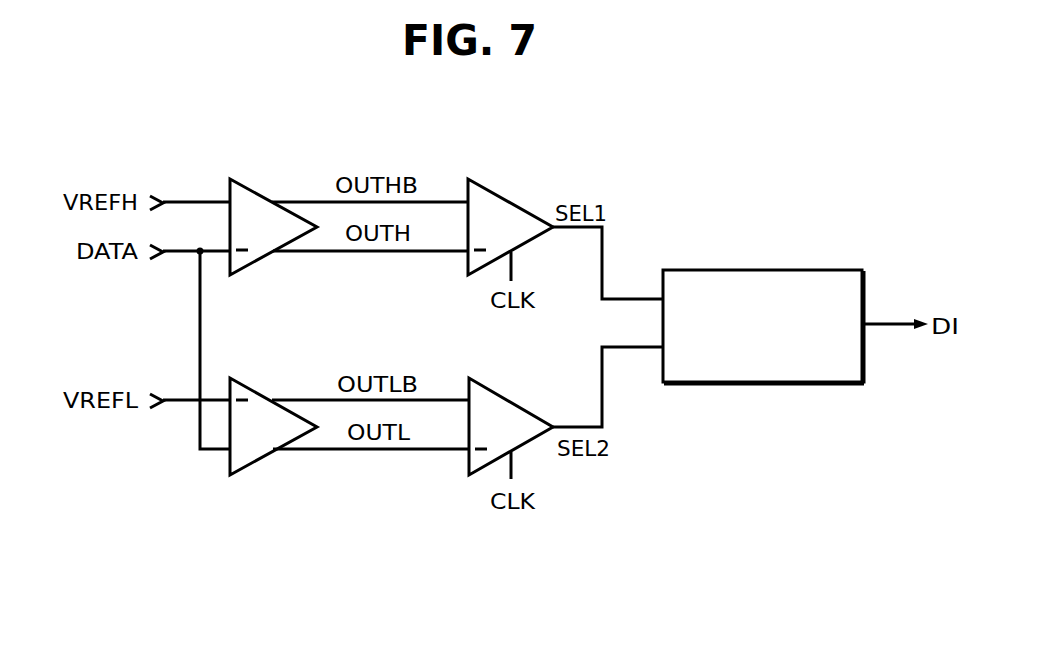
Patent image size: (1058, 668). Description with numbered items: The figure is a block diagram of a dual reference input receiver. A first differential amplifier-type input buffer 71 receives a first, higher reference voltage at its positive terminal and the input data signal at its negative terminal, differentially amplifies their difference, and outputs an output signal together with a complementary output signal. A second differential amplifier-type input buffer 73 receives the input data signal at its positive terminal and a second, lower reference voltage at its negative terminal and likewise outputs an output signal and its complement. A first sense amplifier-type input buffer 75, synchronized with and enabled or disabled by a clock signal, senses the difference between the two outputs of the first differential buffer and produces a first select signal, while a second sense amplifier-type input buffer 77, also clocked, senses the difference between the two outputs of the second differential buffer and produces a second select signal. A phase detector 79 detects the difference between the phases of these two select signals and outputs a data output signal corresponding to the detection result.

The first differential amplifier-type input buffer 71 is at (273, 201).
The second differential amplifier-type input buffer 73 is at (278, 398).
The first sense amplifier-type input buffer 75 is at (512, 198).
The second sense amplifier-type input buffer 77 is at (513, 393).
The phase detector 79 is at (784, 268).